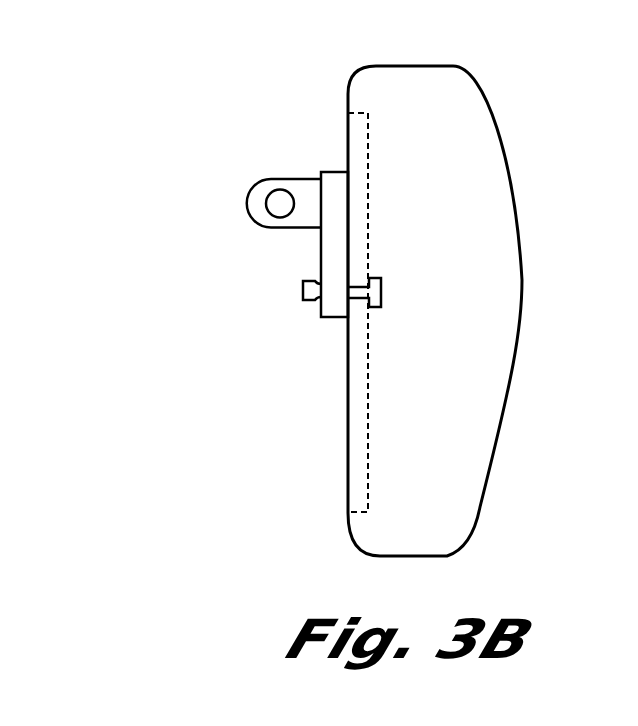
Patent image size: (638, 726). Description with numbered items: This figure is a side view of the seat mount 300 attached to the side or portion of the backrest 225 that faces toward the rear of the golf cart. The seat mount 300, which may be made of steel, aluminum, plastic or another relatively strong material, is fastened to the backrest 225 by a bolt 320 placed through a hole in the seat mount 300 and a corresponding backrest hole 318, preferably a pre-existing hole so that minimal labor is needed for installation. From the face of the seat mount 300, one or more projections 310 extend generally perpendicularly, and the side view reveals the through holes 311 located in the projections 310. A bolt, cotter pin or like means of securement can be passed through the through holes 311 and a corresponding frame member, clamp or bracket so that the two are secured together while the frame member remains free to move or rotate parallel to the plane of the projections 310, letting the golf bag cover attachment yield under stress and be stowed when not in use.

The backrest 225 is at (460, 386).
The seat mount 300 is at (301, 160).
The projection 310 is at (233, 189).
The through hole 311 is at (283, 199).
The backrest hole 318 is at (364, 270).
The bolt 320 is at (287, 305).